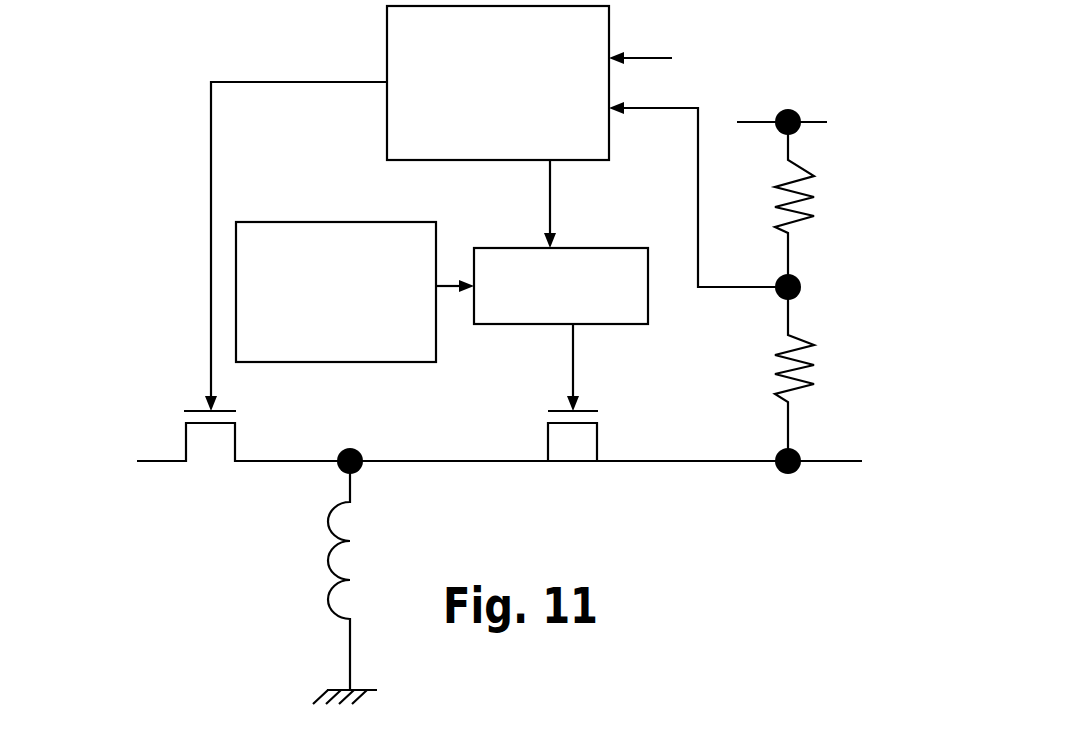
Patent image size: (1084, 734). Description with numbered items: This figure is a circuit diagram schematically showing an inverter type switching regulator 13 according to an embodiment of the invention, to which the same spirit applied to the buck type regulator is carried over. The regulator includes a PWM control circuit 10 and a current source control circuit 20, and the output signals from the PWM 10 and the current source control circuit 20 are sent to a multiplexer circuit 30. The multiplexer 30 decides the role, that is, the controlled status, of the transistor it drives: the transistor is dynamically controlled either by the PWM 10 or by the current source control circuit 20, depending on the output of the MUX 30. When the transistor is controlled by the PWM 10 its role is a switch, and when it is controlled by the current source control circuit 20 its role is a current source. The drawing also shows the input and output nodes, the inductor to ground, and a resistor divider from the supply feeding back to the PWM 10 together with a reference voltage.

The inverter type switching regulator 13 is at (158, 191).
The PWM control circuit 10 is at (517, 124).
The current source control circuit 20 is at (355, 333).
The multiplexer circuit 30 is at (633, 306).